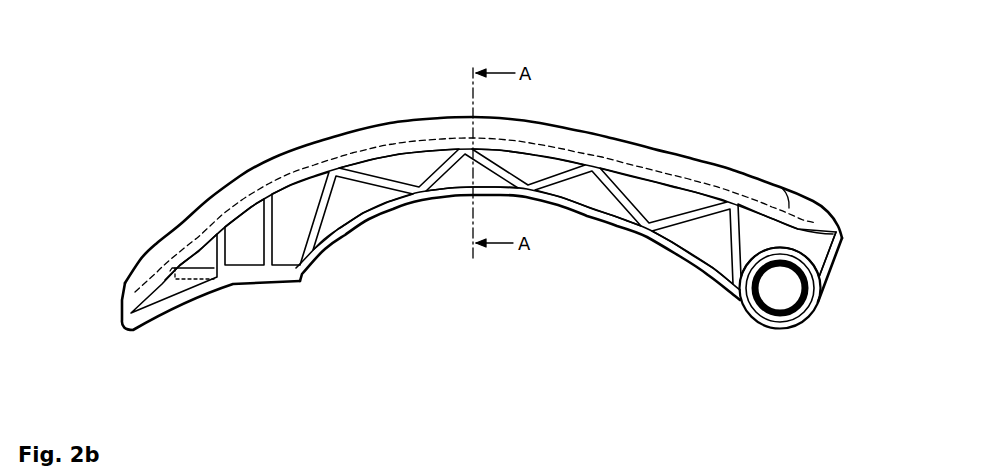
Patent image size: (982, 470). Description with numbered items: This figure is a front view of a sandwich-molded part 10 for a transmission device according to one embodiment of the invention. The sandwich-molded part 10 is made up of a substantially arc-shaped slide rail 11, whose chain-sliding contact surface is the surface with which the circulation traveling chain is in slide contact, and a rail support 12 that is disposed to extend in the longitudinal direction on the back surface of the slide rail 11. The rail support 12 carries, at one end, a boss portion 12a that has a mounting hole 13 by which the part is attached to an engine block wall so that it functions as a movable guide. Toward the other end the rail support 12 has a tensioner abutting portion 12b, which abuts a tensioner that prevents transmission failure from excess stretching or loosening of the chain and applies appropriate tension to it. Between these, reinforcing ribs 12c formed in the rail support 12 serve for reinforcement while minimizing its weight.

The sandwich-molded part 10 is at (624, 119).
The slide rail 11 is at (375, 131).
The rail support 12 is at (577, 215).
The boss portion 12a is at (779, 323).
The tensioner abutting portion 12b is at (272, 287).
The reinforcing ribs 12c is at (623, 204).
The mounting hole 13 is at (779, 289).